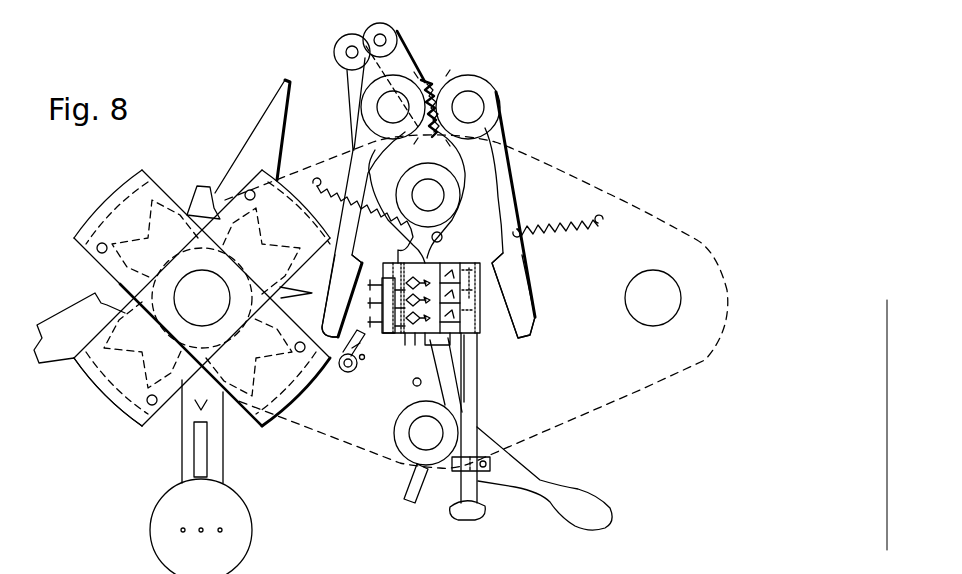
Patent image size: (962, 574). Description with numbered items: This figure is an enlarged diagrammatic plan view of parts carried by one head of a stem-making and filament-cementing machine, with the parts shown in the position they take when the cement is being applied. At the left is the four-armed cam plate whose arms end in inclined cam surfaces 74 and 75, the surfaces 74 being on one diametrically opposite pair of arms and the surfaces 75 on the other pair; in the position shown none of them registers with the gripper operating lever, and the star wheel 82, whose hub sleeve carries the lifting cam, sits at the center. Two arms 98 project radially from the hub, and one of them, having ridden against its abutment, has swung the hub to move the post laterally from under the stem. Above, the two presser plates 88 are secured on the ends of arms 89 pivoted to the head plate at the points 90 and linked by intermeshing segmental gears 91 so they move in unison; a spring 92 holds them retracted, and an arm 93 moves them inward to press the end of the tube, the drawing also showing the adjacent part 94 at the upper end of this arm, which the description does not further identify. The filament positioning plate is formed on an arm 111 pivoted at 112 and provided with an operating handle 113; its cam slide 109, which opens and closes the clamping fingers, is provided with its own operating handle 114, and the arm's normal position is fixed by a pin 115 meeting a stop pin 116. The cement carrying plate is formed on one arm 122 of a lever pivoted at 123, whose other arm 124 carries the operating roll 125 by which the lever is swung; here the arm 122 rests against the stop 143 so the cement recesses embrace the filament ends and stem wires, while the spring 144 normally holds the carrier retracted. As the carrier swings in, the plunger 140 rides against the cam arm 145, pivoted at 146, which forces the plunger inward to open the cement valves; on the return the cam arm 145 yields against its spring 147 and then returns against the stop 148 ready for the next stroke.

The inclined cam surface 74 is at (100, 392).
The inclined cam surface 75 is at (112, 202).
The star wheel 82 is at (202, 184).
The presser plate 88 is at (340, 270).
The presser carrying arm 89 is at (360, 158).
The pivot point 90 is at (383, 105).
The segmental gear 91 is at (430, 82).
The spring 92 is at (559, 228).
The arm 93 is at (400, 58).
The pin 94 is at (392, 33).
The arm 98 is at (262, 133).
The cam slide 109 is at (470, 391).
The arm 111 is at (444, 372).
The pivot 112 is at (420, 434).
The operating handle 113 is at (577, 492).
The operating handle 114 is at (470, 513).
The pin 115 is at (408, 489).
The stop pin 116 is at (414, 384).
The lever arm 122 is at (428, 249).
The pivot 123 is at (432, 195).
The lever arm 124 is at (348, 83).
The operating roll 125 is at (336, 47).
The plunger 140 is at (397, 334).
The stop 143 is at (443, 237).
The spring 144 is at (311, 182).
The cam arm 145 is at (353, 343).
The pivot 146 is at (345, 373).
The spring 147 is at (360, 363).
The stop 148 is at (364, 358).